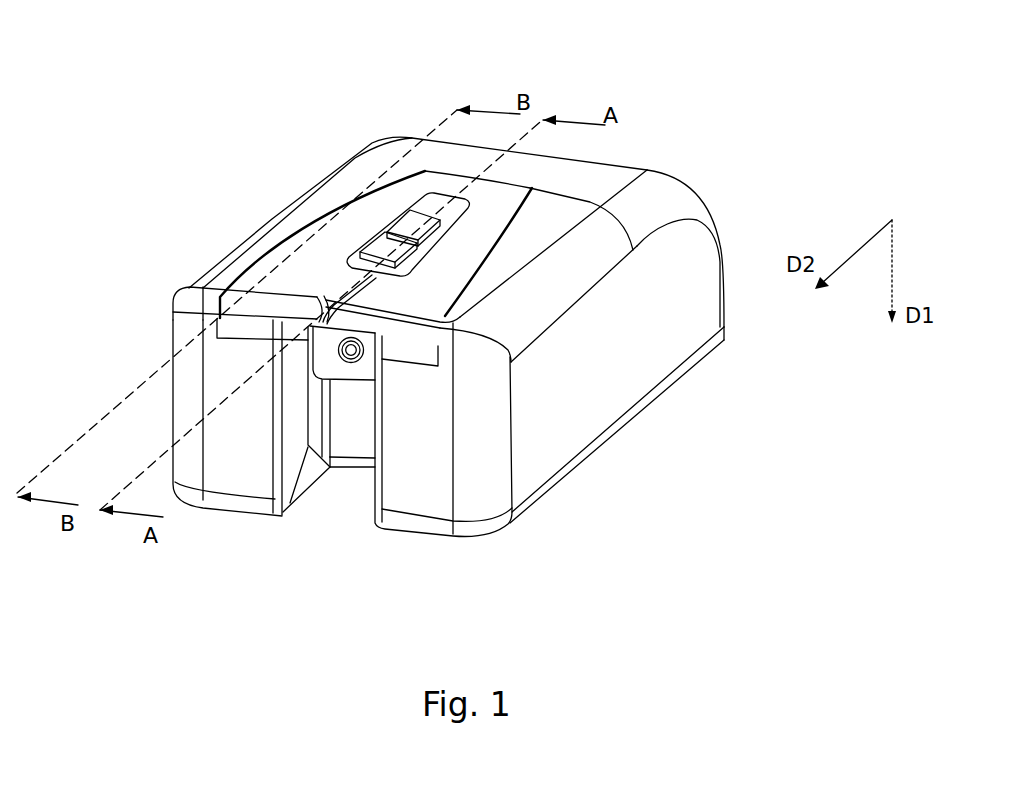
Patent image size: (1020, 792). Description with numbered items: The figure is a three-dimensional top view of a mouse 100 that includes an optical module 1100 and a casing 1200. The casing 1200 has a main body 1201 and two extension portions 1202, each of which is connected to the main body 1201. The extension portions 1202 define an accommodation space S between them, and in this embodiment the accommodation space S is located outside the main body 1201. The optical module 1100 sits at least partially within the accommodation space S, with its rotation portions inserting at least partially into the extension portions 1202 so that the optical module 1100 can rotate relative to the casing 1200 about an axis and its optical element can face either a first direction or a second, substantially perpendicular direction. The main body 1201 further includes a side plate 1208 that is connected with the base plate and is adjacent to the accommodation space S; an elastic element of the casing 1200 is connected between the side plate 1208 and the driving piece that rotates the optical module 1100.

The mouse 100 is at (118, 43).
The optical module 1100 is at (318, 318).
The casing 1200 is at (733, 398).
The main body 1201 is at (567, 392).
The extension portions 1202 is at (435, 422).
The side plate 1208 is at (352, 440).
The accommodation space S is at (320, 414).